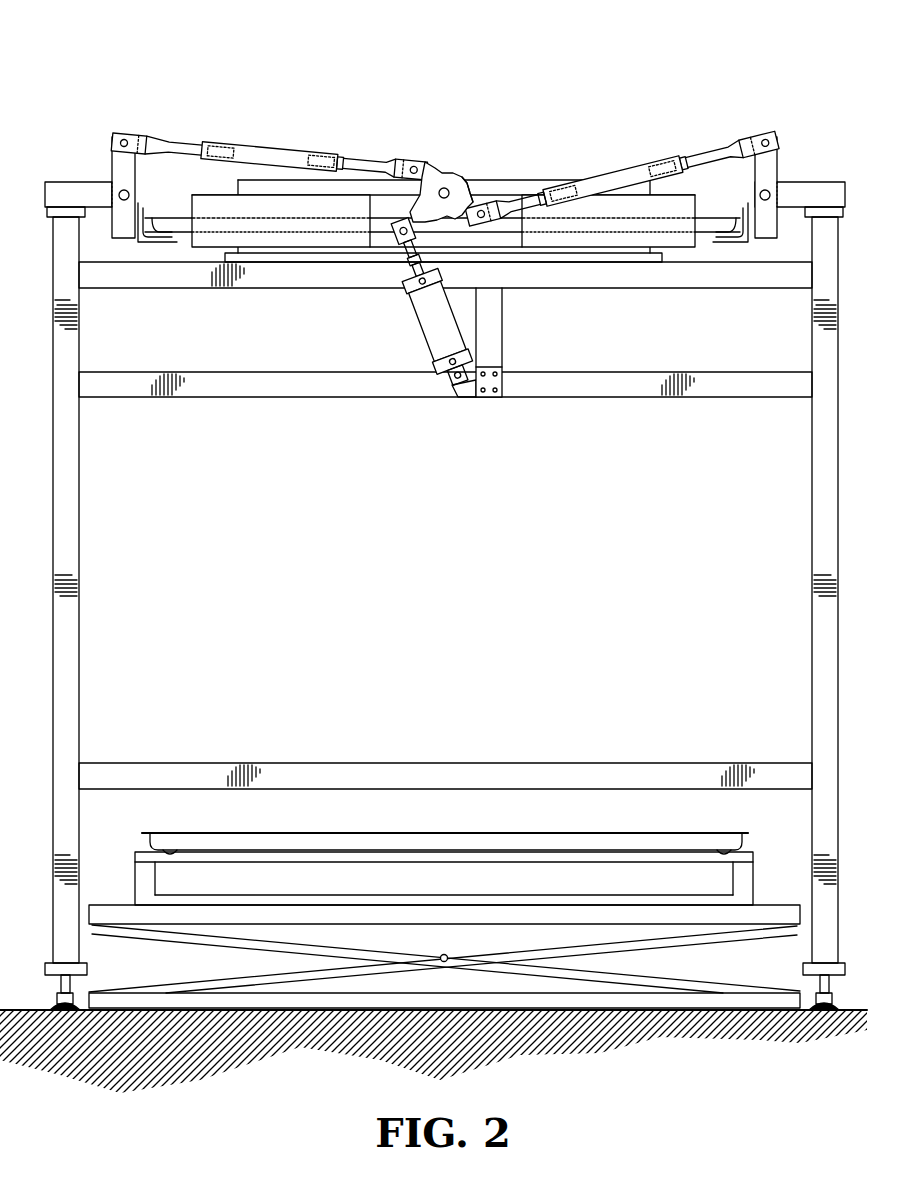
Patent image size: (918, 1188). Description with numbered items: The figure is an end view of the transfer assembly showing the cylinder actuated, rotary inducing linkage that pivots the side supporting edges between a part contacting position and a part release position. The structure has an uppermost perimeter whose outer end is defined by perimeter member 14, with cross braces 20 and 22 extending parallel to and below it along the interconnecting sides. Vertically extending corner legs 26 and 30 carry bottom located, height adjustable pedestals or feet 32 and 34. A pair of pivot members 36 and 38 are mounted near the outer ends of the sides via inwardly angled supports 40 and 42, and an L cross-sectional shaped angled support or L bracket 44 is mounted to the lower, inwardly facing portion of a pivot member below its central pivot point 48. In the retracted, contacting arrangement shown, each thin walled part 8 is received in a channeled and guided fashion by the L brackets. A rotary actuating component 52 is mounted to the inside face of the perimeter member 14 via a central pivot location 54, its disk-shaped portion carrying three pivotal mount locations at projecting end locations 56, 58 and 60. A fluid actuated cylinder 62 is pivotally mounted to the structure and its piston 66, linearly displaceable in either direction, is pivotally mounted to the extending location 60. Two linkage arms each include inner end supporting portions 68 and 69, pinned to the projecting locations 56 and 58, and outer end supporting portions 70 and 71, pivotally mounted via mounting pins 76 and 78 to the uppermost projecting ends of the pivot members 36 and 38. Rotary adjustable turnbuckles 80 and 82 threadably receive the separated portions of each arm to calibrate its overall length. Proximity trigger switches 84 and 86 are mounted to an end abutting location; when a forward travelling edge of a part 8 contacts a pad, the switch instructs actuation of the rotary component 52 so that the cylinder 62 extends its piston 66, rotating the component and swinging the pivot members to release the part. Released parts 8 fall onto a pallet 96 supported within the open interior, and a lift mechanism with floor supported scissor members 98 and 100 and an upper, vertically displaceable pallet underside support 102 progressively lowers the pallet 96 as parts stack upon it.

The thin walled part 8 is at (710, 225).
The outer end perimeter member 14 is at (120, 278).
The cross brace 20 is at (228, 388).
The cross brace 22 is at (337, 780).
The corner leg 26 is at (72, 690).
The corner leg 30 is at (822, 708).
The height adjustable foot 32 is at (65, 1010).
The height adjustable foot 34 is at (830, 1010).
The pivot member 36 is at (776, 165).
The pivot member 38 is at (118, 165).
The inwardly angled support 40 is at (805, 192).
The inwardly angled support 42 is at (82, 192).
The L bracket 44 is at (740, 240).
The central pivot point 48 is at (760, 196).
The rotary actuating component 52 is at (440, 172).
The central pivot location 54 is at (448, 186).
The projecting end location 56 is at (478, 197).
The projecting end location 58 is at (436, 177).
The projecting end location 60 is at (385, 222).
The fluid actuated cylinder 62 is at (440, 335).
The piston 66 is at (427, 248).
The inner end supporting portion 68 is at (545, 220).
The inner end supporting portion 69 is at (363, 160).
The outer end supporting portion 70 is at (708, 152).
The outer end supporting portion 71 is at (172, 140).
The mounting pin 76 is at (756, 142).
The mounting pin 78 is at (125, 139).
The turnbuckle 80 is at (624, 175).
The turnbuckle 82 is at (272, 150).
The proximity trigger switch 84 is at (627, 240).
The proximity trigger switch 86 is at (287, 240).
The pallet 96 is at (429, 857).
The scissor member 98 is at (187, 975).
The scissor member 100 is at (700, 980).
The pallet underside support 102 is at (482, 912).